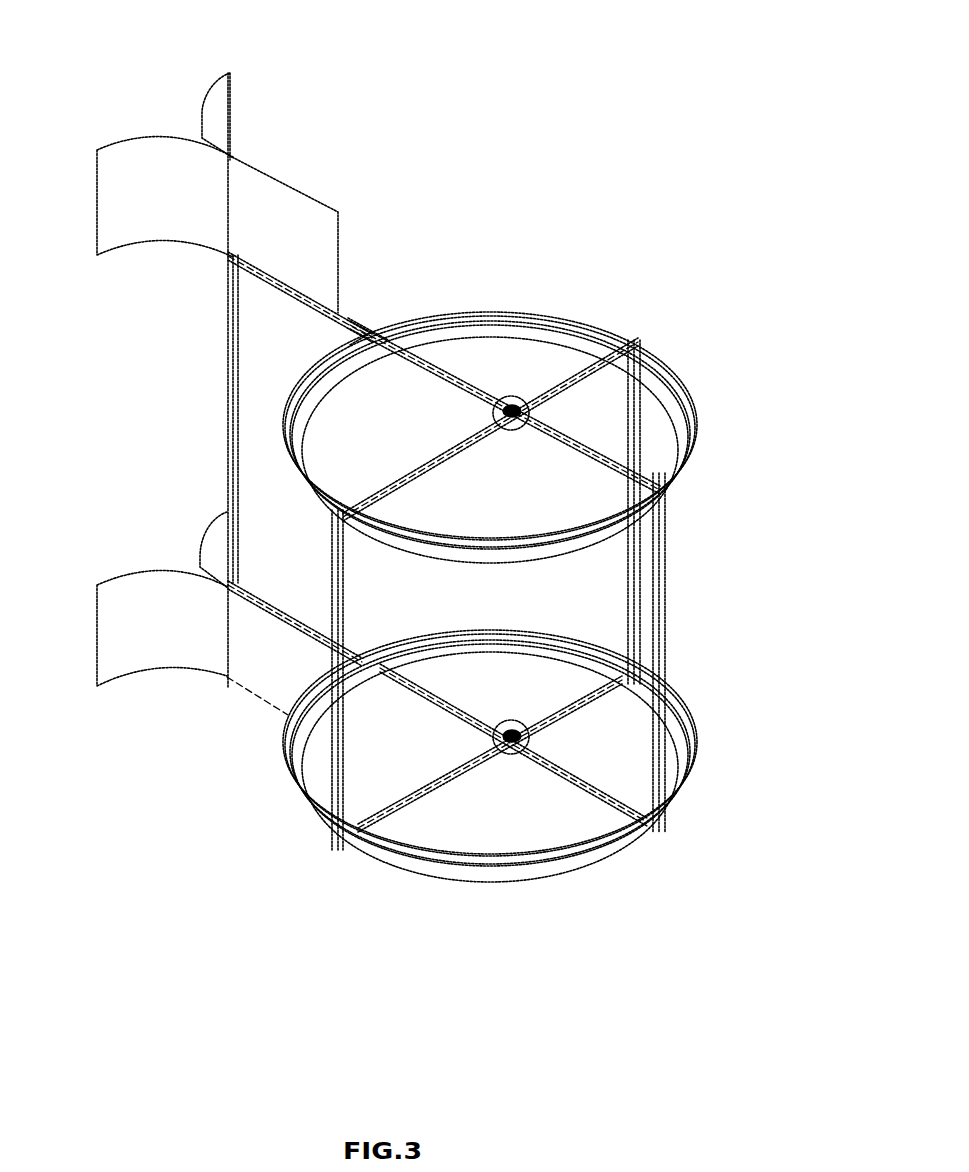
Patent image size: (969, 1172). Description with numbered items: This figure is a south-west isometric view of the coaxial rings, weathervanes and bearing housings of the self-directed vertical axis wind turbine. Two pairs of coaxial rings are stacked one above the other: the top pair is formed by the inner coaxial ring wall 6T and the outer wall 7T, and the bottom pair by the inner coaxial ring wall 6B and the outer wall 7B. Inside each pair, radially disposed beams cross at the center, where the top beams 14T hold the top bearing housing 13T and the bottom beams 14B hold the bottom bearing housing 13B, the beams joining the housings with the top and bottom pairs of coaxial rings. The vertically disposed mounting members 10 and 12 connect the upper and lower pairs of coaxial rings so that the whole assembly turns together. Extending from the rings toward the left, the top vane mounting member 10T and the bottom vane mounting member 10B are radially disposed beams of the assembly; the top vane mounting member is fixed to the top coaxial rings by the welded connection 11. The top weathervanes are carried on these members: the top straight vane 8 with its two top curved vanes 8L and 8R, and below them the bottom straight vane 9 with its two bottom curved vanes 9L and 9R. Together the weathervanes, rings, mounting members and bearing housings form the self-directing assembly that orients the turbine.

The inner coaxial ring wall 6T is at (510, 318).
The inner coaxial ring wall 6B is at (380, 847).
The outer wall of top coaxial ring 7T is at (465, 312).
The outer wall of bottom coaxial ring 7B is at (423, 850).
The top straight vane 8 is at (282, 222).
The top curved vane 8L is at (185, 155).
The top curved vane 8R is at (225, 102).
The bottom straight vane 9 is at (257, 637).
The bottom curved vane 9L is at (133, 588).
The bottom curved vane 9R is at (213, 532).
The vertically disposed mounting member 10 is at (228, 327).
The top vane mounting member 10T is at (348, 320).
The bottom vane mounting member 10B is at (303, 628).
The welded connection 11 is at (369, 334).
The vertically disposed mounting member 12 is at (340, 718).
The top bearing housing 13T is at (522, 412).
The bottom bearing housing 13B is at (527, 742).
The radially disposed beam 14T is at (462, 390).
The radially disposed beam 14B is at (543, 766).